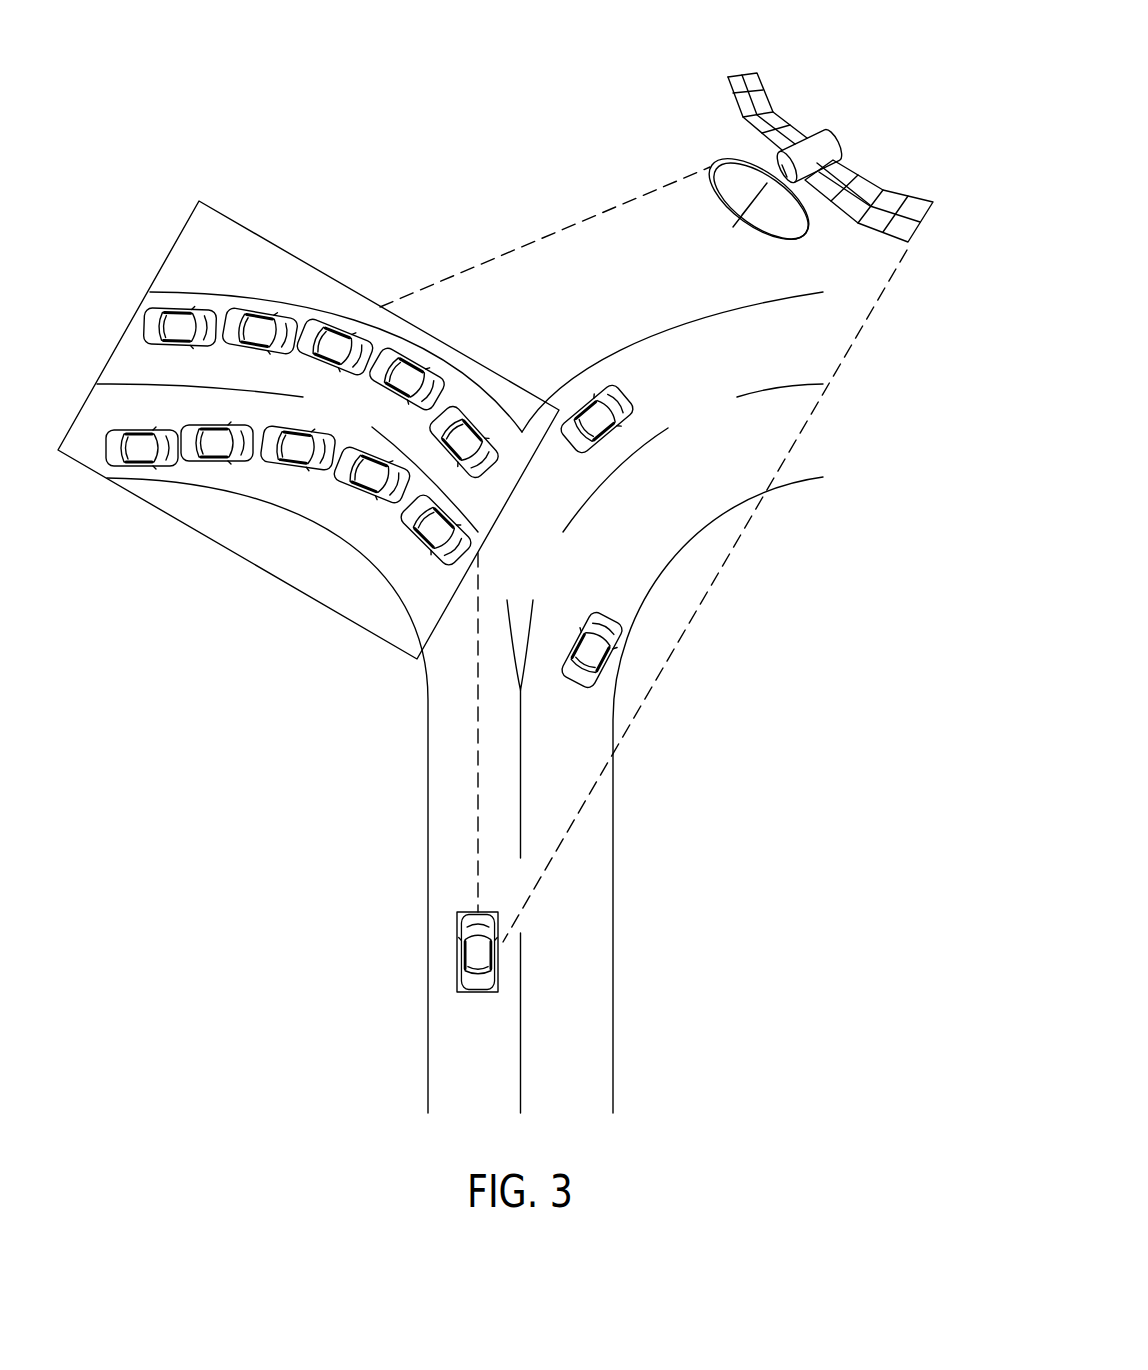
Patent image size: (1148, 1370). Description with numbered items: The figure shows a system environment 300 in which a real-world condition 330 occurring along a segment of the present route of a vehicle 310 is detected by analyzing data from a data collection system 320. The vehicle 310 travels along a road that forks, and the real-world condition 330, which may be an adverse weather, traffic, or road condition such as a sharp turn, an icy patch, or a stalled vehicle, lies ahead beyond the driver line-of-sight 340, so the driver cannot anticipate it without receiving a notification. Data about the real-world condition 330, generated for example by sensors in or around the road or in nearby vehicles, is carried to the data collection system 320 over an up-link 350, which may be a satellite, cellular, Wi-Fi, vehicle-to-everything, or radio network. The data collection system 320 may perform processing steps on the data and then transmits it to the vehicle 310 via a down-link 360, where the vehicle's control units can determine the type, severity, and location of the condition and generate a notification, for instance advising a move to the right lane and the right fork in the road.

The system environment 300 is at (312, 62).
The vehicle 310 is at (457, 950).
The data collection system 320 is at (824, 136).
The real-world condition 330 is at (258, 233).
The driver line-of-sight 340 is at (478, 733).
The up-link 350 is at (547, 233).
The down-link 360 is at (713, 583).